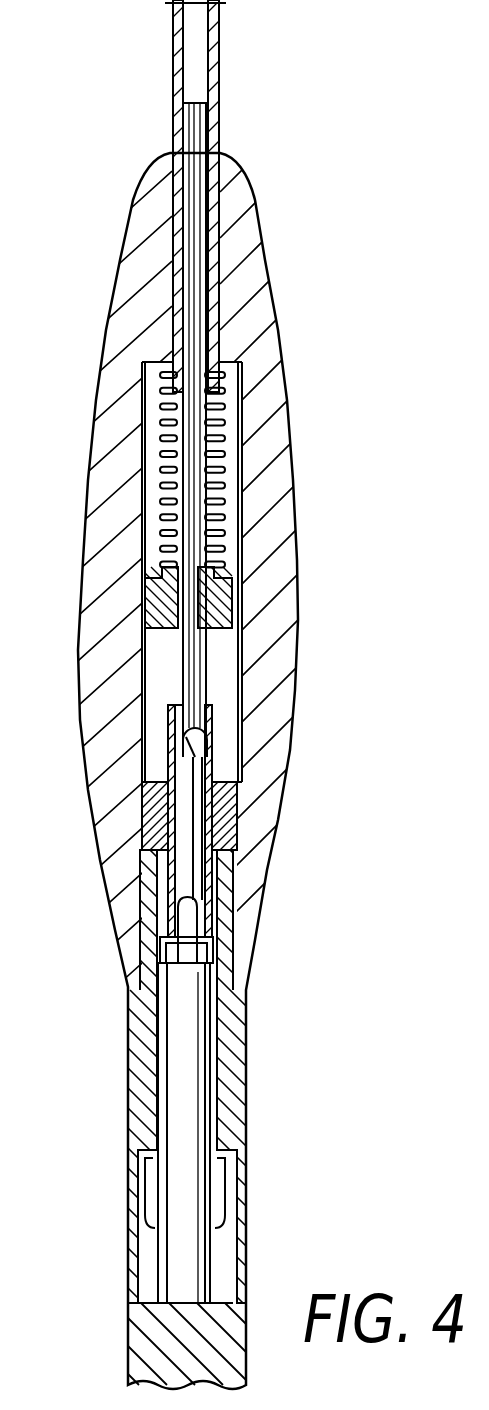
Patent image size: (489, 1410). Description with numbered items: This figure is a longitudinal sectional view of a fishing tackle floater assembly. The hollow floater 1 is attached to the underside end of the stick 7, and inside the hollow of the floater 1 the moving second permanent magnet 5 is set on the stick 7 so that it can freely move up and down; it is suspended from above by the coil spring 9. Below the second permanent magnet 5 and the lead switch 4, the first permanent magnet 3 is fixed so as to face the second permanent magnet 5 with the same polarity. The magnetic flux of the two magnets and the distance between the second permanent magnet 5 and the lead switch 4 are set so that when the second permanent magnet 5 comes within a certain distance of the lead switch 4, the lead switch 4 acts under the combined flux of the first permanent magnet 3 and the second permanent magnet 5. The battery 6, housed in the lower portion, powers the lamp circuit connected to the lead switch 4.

The floater 1 is at (278, 437).
The first permanent magnet 3 is at (220, 828).
The lead switch 4 is at (193, 763).
The second permanent magnet 5 is at (222, 603).
The battery 6 is at (187, 1058).
The stick 7 is at (218, 68).
The coil spring 9 is at (223, 477).